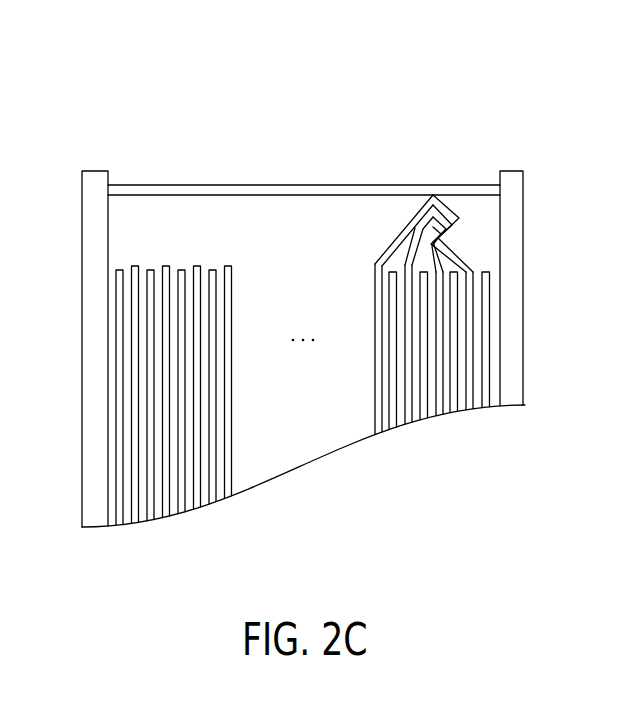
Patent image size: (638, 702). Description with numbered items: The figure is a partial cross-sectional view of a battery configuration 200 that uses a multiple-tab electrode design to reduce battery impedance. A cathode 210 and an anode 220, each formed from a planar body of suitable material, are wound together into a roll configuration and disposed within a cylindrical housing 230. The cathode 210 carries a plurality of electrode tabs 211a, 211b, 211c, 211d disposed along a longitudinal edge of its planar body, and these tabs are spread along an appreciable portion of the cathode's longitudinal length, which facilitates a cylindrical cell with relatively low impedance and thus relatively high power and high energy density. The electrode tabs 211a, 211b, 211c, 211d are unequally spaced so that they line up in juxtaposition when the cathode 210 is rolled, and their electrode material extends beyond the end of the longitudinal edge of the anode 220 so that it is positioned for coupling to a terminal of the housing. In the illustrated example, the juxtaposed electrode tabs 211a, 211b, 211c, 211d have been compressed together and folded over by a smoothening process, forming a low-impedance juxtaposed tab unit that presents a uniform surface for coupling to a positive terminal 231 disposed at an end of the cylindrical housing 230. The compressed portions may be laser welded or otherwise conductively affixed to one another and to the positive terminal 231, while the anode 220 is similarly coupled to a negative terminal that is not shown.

The battery configuration 200 is at (531, 105).
The cathode 210 is at (133, 526).
The anode 220 is at (118, 527).
The cylindrical housing 230 is at (92, 243).
The positive terminal 231 is at (431, 186).
The electrode tab 211a is at (456, 244).
The electrode tab 211b is at (440, 259).
The electrode tab 211c is at (405, 252).
The electrode tab 211d is at (376, 260).